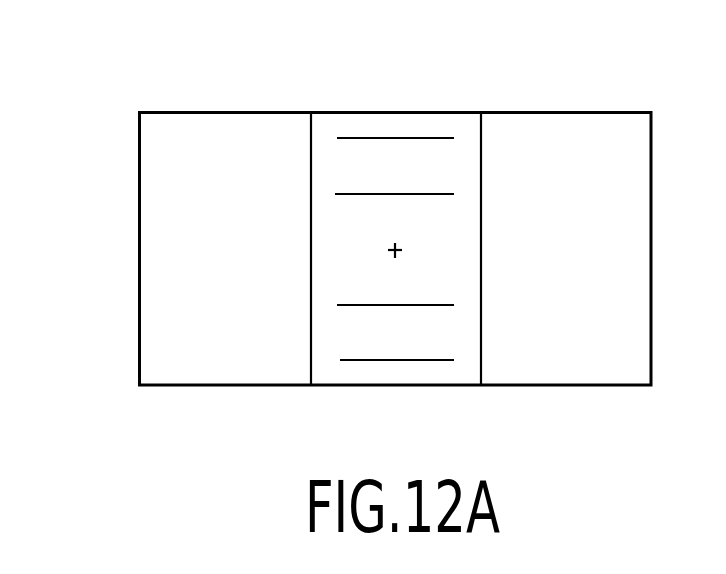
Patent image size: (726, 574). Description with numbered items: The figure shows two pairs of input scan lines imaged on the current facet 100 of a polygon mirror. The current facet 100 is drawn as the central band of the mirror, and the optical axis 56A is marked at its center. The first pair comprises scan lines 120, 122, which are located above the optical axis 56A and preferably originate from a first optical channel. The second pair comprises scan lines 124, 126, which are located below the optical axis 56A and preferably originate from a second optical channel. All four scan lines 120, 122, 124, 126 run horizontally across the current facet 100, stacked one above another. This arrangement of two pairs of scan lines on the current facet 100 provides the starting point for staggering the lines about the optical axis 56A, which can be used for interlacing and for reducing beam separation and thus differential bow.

The current facet 100 is at (360, 112).
The scan line 120 is at (425, 137).
The scan line 122 is at (335, 194).
The optical axis 56A is at (400, 248).
The scan line 124 is at (454, 305).
The scan line 126 is at (340, 360).